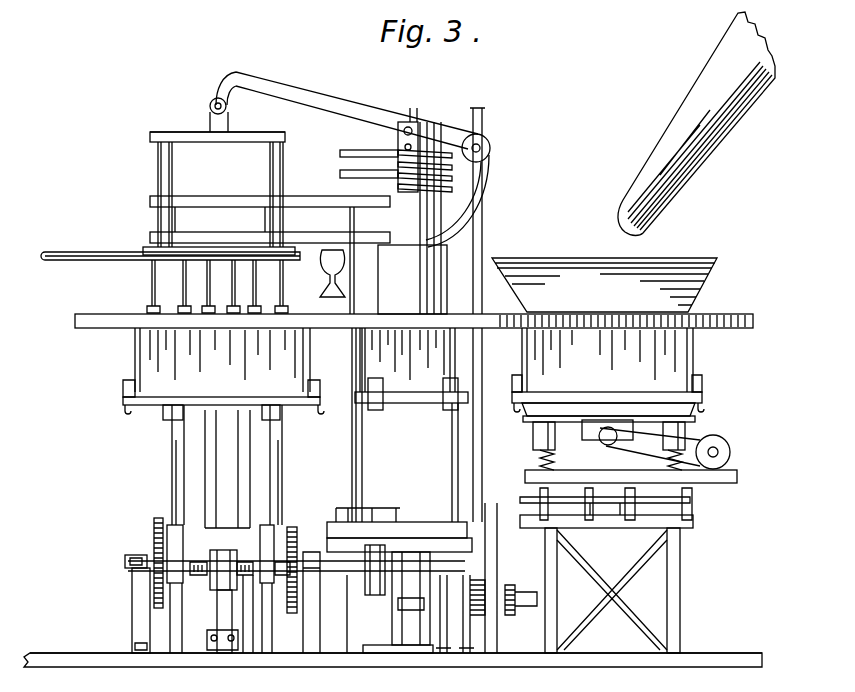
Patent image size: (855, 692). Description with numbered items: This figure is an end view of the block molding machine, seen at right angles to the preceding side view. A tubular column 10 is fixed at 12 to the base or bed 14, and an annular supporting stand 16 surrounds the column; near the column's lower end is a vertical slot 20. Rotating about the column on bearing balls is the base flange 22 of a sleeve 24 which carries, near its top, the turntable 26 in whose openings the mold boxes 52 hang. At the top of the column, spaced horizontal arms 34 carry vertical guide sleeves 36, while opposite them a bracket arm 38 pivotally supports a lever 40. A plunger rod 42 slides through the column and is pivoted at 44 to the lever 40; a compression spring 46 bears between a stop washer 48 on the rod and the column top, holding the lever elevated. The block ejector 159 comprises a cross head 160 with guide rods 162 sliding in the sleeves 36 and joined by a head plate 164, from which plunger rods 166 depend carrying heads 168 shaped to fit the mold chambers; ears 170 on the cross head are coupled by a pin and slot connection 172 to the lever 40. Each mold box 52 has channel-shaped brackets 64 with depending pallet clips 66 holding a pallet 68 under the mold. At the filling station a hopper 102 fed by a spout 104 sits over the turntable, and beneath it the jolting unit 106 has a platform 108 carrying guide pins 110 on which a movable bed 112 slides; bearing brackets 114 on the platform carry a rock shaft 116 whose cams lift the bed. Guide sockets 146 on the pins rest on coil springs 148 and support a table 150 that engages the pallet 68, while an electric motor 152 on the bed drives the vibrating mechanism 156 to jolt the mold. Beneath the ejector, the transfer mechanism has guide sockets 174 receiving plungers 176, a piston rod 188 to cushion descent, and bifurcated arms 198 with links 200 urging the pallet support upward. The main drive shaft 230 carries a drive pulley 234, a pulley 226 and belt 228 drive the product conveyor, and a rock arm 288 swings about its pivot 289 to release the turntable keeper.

The column 10 is at (395, 620).
The fixing of column 12 is at (402, 648).
The base or bed 14 is at (522, 658).
The annular supporting stand 16 is at (396, 545).
The vertically extending slot 20 is at (420, 604).
The base flange 22 is at (356, 524).
The rotatable sleeve 24 is at (450, 470).
The turntable 26 is at (402, 313).
The horizontally projecting arms 34 is at (298, 235).
The vertical guide sleeves 36 is at (262, 219).
The bracket arm 38 is at (474, 188).
The lever 40 is at (348, 108).
The plunger rod 42 is at (422, 160).
The pivotal connection 44 is at (410, 121).
The compression spring 46 is at (430, 170).
The stop washer 48 is at (392, 150).
The mold box 52 is at (683, 352).
The channel-shaped brackets 64 is at (702, 383).
The pallet clips 66 is at (702, 405).
The pallet 68 is at (585, 393).
The hopper 102 is at (688, 268).
The aggregate conveying spout 104 is at (690, 110).
The mold jolting unit 106 is at (692, 565).
The platform 108 is at (694, 522).
The guide pins 110 is at (692, 498).
The movable bed 112 is at (580, 475).
The bearing brackets 114 is at (590, 510).
The rock shaft 116 is at (620, 512).
The guide sockets 146 is at (686, 430).
The compression coil springs 148 is at (540, 458).
The table 150 is at (612, 400).
The electric motor 152 is at (730, 450).
The vibrating or jolting mechanism 156 is at (628, 462).
The block ejector 159 is at (182, 127).
The cross head 160 is at (230, 142).
The guide rods 162 is at (282, 158).
The head plate 164 is at (210, 266).
The plunger rods 166 is at (182, 280).
The heads 168 is at (207, 314).
The ears 170 is at (210, 118).
The pin and slot connection 172 is at (214, 100).
The guide sockets 174 is at (270, 535).
The plungers 176 is at (282, 472).
The piston rod 188 is at (222, 455).
The arms 198 is at (240, 533).
The links 200 is at (282, 479).
The pulley 226 is at (242, 588).
The endless belt 228 is at (218, 590).
The main drive shaft 230 is at (332, 575).
The drive pulley 234 is at (385, 585).
The rock arm 288 is at (440, 625).
The pivot 289 is at (470, 648).